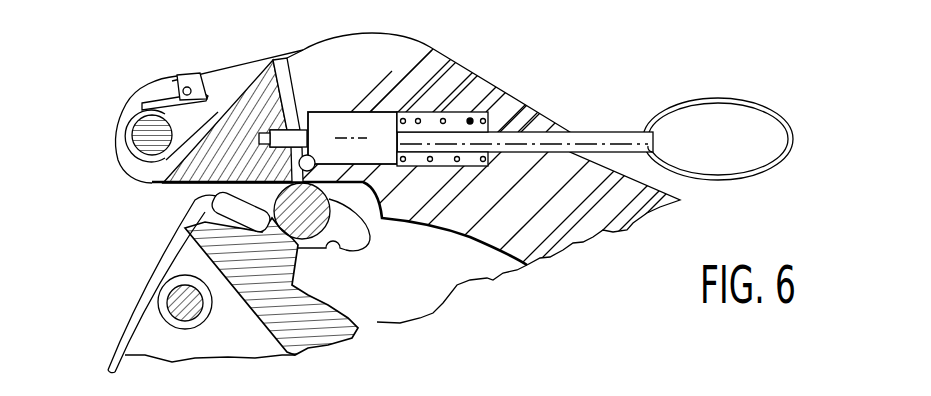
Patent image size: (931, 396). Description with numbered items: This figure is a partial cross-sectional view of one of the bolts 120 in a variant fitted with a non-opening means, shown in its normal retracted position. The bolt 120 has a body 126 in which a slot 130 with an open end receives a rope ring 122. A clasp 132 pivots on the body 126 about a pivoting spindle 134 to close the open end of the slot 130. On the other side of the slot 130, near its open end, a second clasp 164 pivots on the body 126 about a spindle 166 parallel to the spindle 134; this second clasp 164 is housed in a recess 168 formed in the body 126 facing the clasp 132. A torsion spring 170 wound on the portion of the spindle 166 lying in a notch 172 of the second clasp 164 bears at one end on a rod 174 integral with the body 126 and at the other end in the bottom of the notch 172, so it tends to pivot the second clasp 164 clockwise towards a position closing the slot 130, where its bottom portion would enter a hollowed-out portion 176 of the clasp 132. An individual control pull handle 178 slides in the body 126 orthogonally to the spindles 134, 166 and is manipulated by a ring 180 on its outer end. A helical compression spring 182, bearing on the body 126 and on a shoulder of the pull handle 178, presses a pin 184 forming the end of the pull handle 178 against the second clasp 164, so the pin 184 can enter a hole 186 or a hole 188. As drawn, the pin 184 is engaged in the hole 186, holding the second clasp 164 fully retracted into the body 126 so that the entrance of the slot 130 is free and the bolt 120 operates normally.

The bolt 120 is at (575, 99).
The ring 122 is at (312, 217).
The body 126 is at (446, 84).
The slot 130 is at (346, 250).
The clasp 132 is at (120, 327).
The pivoting spindle 134 is at (187, 303).
The second clasp 164 is at (206, 65).
The spindle 166 is at (135, 126).
The recess 168 is at (380, 183).
The torsion spring 170 is at (140, 110).
The notch 172 is at (250, 85).
The rod 174 is at (178, 78).
The hollowed-out portion 176 is at (183, 208).
The pull handle 178 is at (538, 143).
The ring 180 is at (723, 103).
The helical compression spring 182 is at (470, 118).
The pin 184 is at (307, 130).
The hole 186 is at (259, 139).
The hole 188 is at (303, 67).